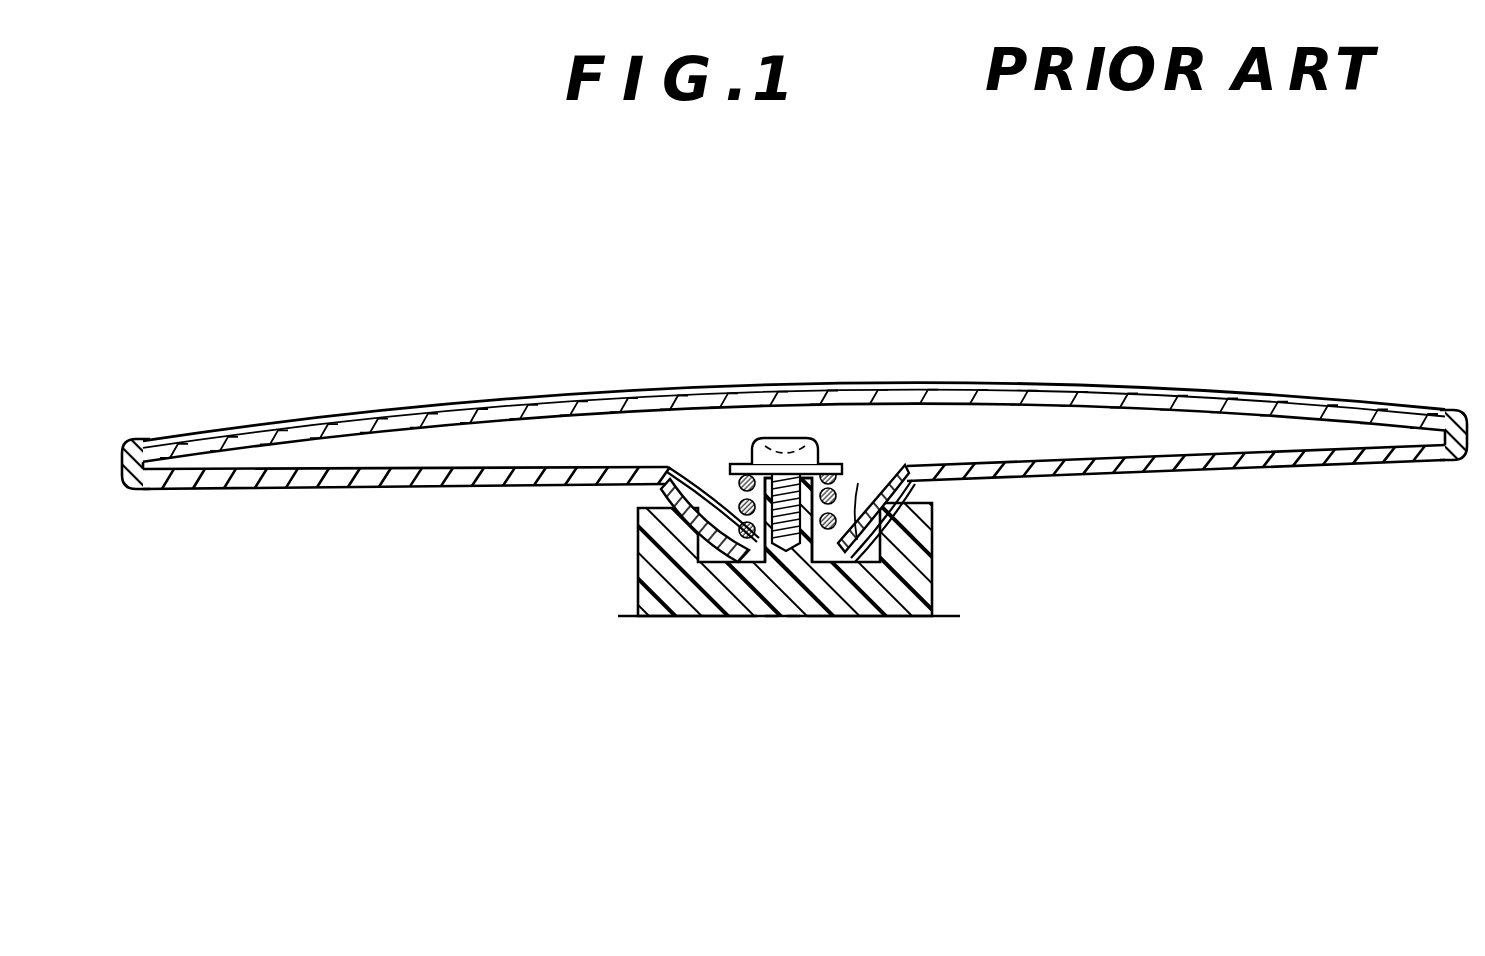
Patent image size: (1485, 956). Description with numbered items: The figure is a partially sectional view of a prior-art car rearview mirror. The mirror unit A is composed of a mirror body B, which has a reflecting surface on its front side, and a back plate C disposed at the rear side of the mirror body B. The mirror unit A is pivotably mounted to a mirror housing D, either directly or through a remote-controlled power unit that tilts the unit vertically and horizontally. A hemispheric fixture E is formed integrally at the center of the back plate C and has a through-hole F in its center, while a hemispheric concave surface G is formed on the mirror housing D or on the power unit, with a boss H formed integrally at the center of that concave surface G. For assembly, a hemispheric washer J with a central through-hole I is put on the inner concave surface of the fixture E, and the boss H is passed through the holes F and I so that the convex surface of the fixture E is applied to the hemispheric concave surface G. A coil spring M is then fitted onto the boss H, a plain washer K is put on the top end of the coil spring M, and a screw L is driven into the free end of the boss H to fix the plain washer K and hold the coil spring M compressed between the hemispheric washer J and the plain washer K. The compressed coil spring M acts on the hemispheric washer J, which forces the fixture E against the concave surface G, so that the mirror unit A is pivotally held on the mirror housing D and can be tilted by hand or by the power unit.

The mirror unit A is at (272, 420).
The mirror body B is at (352, 415).
The back plate C is at (460, 489).
The mirror housing D is at (935, 602).
The hemispheric fixture E is at (712, 550).
The through-hole F is at (757, 555).
The hemispheric concave surface G is at (877, 483).
The boss H is at (706, 482).
The through-hole I is at (797, 545).
The hemispheric washer J is at (858, 540).
The plain washer K is at (834, 464).
The screw L is at (765, 438).
The coil spring M is at (748, 466).